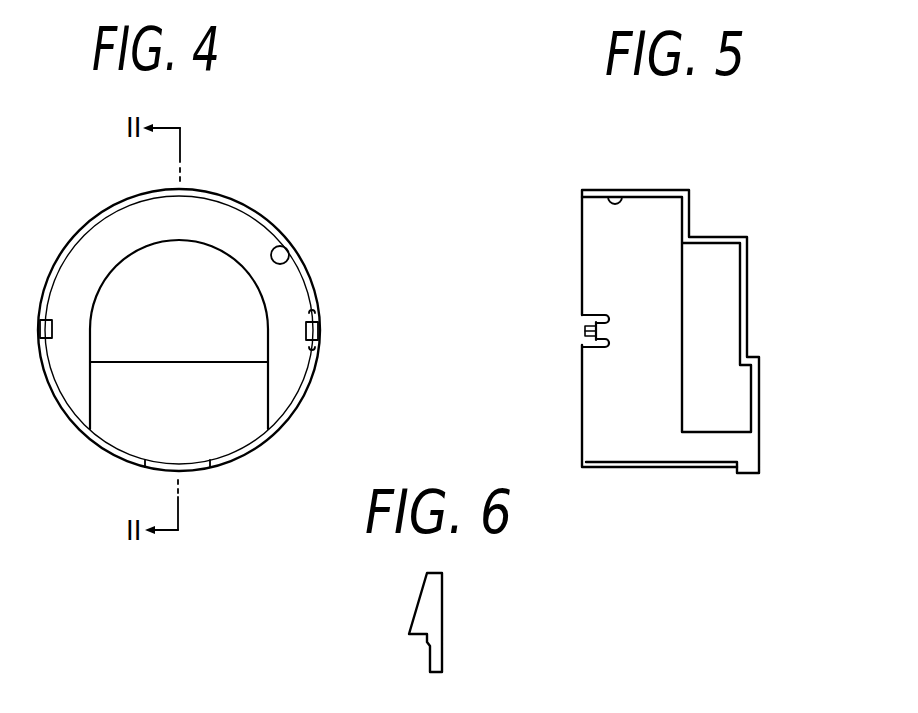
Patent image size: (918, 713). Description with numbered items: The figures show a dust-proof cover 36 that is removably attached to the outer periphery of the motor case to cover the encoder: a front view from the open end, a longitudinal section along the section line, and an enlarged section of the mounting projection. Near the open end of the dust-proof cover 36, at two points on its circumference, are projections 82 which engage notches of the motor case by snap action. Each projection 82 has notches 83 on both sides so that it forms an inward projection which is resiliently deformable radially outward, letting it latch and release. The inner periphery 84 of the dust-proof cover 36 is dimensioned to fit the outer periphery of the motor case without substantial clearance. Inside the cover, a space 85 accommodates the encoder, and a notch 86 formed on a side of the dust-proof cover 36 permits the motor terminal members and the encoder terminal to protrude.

In FIG. 4, the dust-proof cover 36 is at (275, 211).
In FIG. 5, the dust-proof cover 36 is at (697, 207).
In FIG. 4, the projection 82 is at (52, 328).
In FIG. 5, the projection 82 is at (585, 331).
In FIG. 6, the projection 82 is at (418, 597).
In FIG. 4, the notches 83 is at (315, 312).
In FIG. 5, the notches 83 is at (598, 316).
In FIG. 4, the inner periphery 84 is at (290, 264).
In FIG. 5, the inner periphery 84 is at (618, 205).
In FIG. 4, the space 85 is at (197, 268).
In FIG. 5, the space 85 is at (720, 313).
In FIG. 4, the notch 86 is at (207, 474).
In FIG. 5, the notch 86 is at (664, 468).